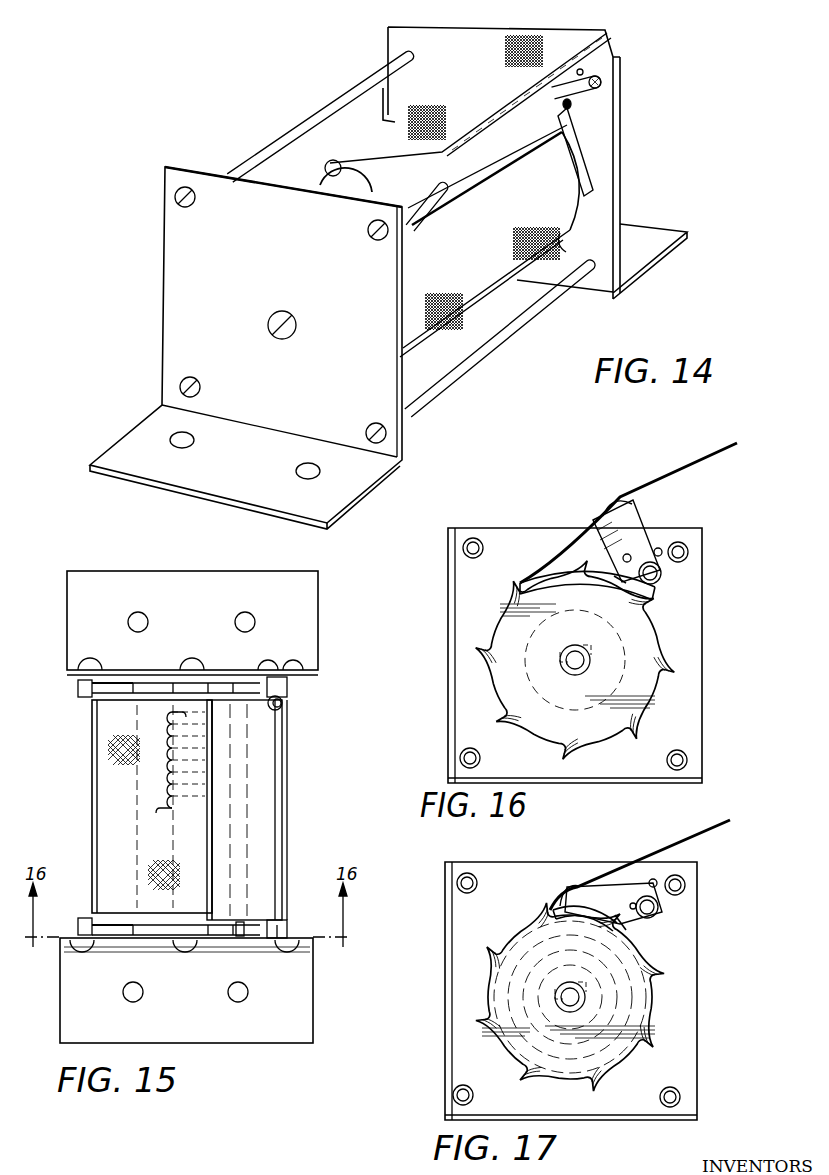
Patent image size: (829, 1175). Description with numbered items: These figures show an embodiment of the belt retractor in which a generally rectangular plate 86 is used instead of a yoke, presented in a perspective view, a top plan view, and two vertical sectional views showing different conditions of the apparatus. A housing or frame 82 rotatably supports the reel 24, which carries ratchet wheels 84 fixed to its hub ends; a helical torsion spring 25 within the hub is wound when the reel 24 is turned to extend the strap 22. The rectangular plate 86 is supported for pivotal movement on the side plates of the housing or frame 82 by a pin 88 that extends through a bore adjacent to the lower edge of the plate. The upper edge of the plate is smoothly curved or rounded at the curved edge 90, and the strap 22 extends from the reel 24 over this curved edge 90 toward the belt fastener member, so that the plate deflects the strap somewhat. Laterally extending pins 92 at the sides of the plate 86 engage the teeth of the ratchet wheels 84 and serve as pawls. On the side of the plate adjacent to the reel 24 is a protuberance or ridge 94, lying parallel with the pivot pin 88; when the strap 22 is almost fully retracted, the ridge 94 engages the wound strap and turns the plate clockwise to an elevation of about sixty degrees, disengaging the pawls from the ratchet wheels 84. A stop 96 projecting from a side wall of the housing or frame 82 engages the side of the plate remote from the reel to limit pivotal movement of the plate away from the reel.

In FIG. 14, the strap 22 is at (393, 120).
In FIG. 15, the strap 22 is at (92, 728).
In FIG. 16, the strap 22 is at (685, 463).
In FIG. 17, the strap 22 is at (683, 843).
In FIG. 14, the reel 24 is at (487, 303).
In FIG. 15, the reel 24 is at (122, 777).
In FIG. 16, the reel 24 is at (672, 623).
In FIG. 15, the helical torsion spring 25 is at (163, 812).
In FIG. 14, the housing or frame 82 is at (620, 190).
In FIG. 14, the ratchet wheels 84 is at (588, 190).
In FIG. 15, the ratchet wheels 84 is at (110, 688).
In FIG. 16, the ratchet wheels 84 is at (578, 598).
In FIG. 14, the generally rectangular plate 86 is at (506, 150).
In FIG. 15, the generally rectangular plate 86 is at (260, 787).
In FIG. 16, the generally rectangular plate 86 is at (637, 527).
In FIG. 17, the generally rectangular plate 86 is at (597, 893).
In FIG. 14, the pin 88 is at (572, 107).
In FIG. 16, the pin 88 is at (662, 573).
In FIG. 14, the curved edge 90 is at (332, 166).
In FIG. 16, the curved edge 90 is at (631, 508).
In FIG. 17, the curved edge 90 is at (573, 883).
In FIG. 15, the laterally extending pins 92 is at (240, 934).
In FIG. 16, the laterally extending pins 92 is at (623, 557).
In FIG. 17, the laterally extending pins 92 is at (636, 906).
In FIG. 15, the protuberance or ridge 94 is at (250, 848).
In FIG. 16, the protuberance or ridge 94 is at (621, 580).
In FIG. 17, the protuberance or ridge 94 is at (638, 923).
In FIG. 14, the stop 96 is at (582, 70).
In FIG. 15, the stop 96 is at (280, 708).
In FIG. 16, the stop 96 is at (661, 550).
In FIG. 17, the stop 96 is at (658, 880).